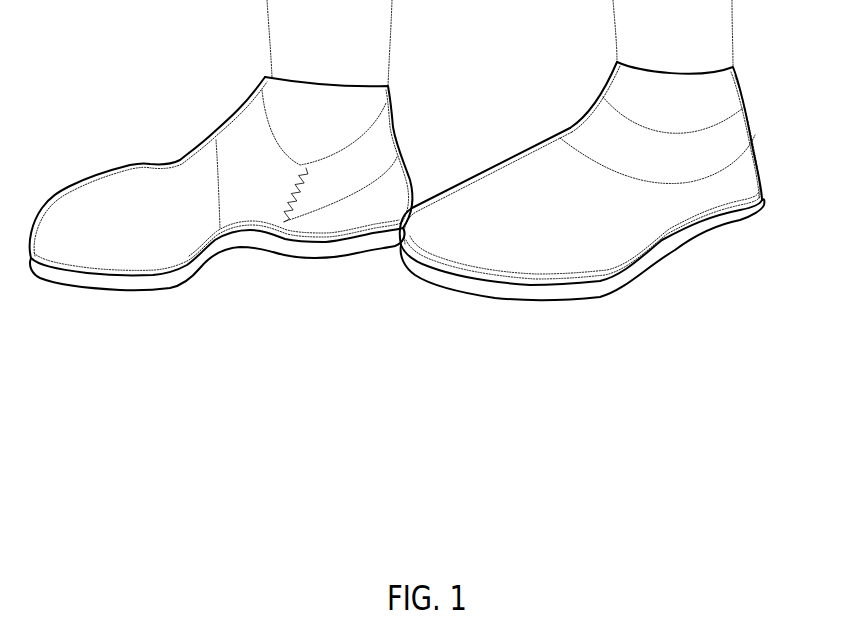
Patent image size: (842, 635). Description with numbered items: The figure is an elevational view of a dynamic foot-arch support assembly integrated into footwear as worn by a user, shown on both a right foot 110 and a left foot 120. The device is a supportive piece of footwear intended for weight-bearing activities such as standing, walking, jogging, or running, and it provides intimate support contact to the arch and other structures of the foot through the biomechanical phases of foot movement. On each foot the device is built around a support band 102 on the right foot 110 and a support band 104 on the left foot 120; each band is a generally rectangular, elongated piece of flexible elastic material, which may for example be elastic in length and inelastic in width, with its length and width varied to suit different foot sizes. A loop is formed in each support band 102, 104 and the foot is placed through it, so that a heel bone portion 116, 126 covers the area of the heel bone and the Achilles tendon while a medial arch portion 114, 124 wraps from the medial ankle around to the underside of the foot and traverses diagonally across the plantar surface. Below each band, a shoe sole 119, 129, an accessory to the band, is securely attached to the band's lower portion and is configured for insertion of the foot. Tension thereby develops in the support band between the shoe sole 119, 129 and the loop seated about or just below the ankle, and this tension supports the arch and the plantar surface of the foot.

The right foot 110 is at (236, 197).
The support band 102 is at (326, 191).
The heel bone portion 116 is at (377, 150).
The medial arch portion 114 is at (247, 203).
The shoe sole 119 is at (163, 283).
The left foot 120 is at (601, 202).
The support band 104 is at (692, 167).
The medial arch portion 124 is at (557, 140).
The heel bone portion 126 is at (733, 140).
The shoe sole 129 is at (503, 290).